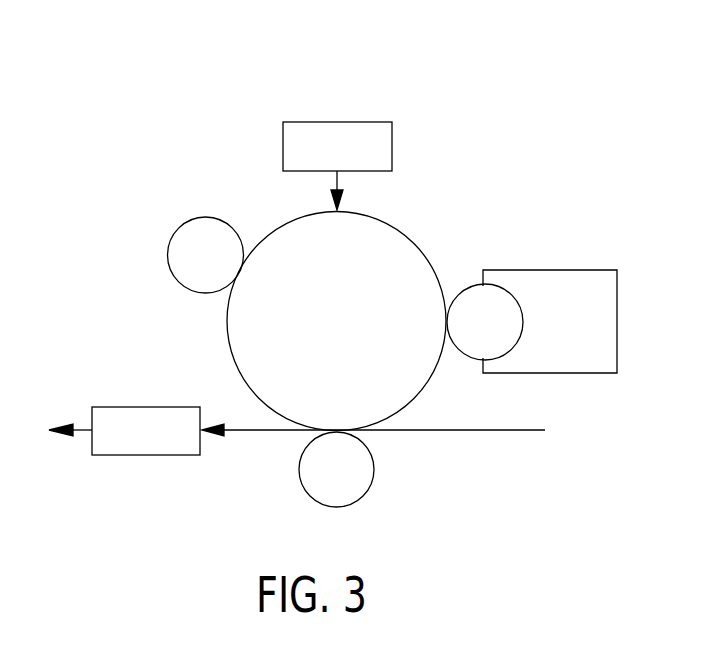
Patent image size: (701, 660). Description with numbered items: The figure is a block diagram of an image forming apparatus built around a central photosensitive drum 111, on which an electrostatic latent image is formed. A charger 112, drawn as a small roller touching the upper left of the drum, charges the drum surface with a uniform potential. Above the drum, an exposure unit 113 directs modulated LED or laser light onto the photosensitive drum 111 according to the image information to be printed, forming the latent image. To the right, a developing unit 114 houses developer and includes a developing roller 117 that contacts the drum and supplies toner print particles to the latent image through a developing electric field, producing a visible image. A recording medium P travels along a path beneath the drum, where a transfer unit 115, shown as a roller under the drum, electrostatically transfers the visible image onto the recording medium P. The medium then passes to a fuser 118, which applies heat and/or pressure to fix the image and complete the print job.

The photosensitive drum 111 is at (407, 237).
The charger 112 is at (204, 218).
The exposure unit 113 is at (361, 121).
The developing unit 114 is at (551, 270).
The transfer unit 115 is at (373, 465).
The developing roller 117 is at (462, 287).
The fuser 118 is at (146, 406).
The recording medium P is at (233, 432).